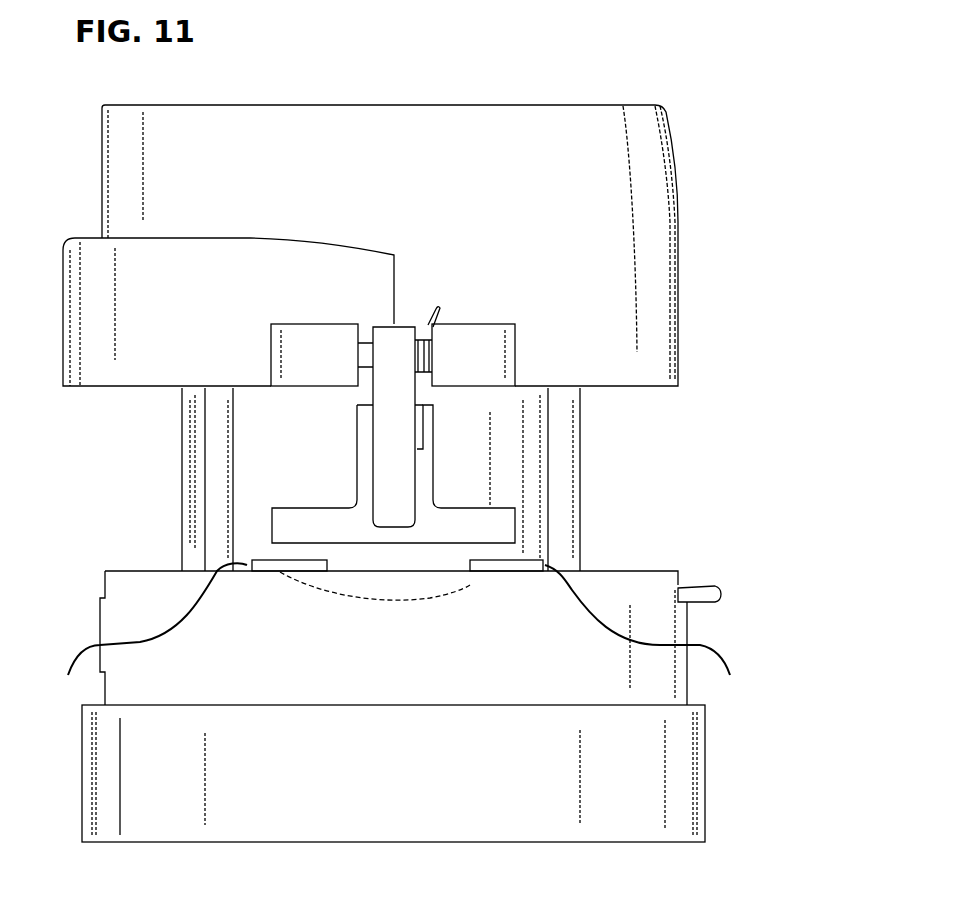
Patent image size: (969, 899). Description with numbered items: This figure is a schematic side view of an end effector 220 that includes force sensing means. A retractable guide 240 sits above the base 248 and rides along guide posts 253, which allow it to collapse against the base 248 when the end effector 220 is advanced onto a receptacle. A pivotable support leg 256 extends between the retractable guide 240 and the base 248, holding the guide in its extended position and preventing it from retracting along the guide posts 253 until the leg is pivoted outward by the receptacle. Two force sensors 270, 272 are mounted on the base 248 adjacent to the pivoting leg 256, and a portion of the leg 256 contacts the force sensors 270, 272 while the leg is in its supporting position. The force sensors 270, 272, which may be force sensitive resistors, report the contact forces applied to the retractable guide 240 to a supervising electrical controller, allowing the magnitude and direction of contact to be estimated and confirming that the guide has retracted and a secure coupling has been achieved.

The end effector 220 is at (638, 73).
The retractable guide 240 is at (660, 218).
The base 248 is at (670, 675).
The guide posts 253 is at (215, 432).
The support leg 256 is at (410, 392).
The force sensor 270 is at (255, 560).
The force sensor 272 is at (515, 560).